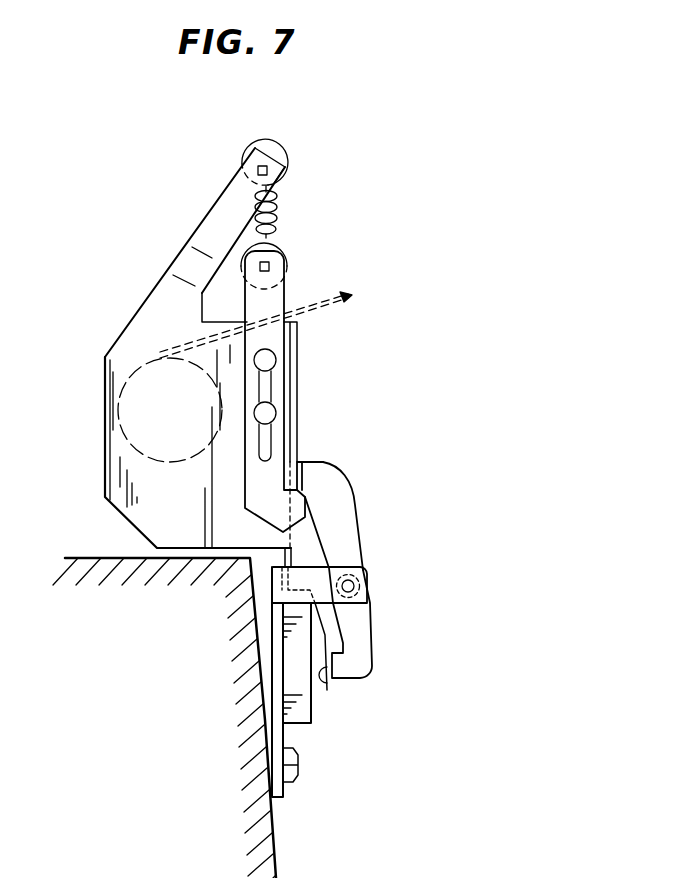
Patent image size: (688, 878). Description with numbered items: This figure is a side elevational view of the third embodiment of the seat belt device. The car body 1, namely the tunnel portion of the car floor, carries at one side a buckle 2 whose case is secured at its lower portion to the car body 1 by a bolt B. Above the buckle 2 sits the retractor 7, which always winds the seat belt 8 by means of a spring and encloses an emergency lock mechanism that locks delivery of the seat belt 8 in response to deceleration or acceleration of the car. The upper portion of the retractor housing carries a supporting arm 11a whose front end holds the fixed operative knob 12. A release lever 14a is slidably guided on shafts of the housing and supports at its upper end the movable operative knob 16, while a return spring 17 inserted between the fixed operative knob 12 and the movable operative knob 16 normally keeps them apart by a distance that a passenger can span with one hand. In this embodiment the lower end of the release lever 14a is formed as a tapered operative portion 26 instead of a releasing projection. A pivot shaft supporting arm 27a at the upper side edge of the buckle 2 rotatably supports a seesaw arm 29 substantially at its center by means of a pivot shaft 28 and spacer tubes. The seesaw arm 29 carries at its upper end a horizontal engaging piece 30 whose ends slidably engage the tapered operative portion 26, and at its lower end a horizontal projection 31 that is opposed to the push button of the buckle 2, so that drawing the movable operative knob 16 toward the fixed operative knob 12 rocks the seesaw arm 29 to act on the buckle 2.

The car body 1 is at (277, 830).
The buckle 2 is at (317, 703).
The retractor 7 is at (122, 444).
The seat belt 8 is at (347, 306).
The supporting arm 11a is at (220, 217).
The fixed operative knob 12 is at (287, 158).
The release lever 14a is at (278, 434).
The movable operative knob 16 is at (285, 256).
The return spring 17 is at (277, 205).
The tapered operative portion 26 is at (333, 480).
The pivot shaft supporting arm 27a is at (318, 578).
The pivot shaft 28 is at (366, 590).
The seesaw arm 29 is at (348, 527).
The horizontal engaging piece 30 is at (300, 462).
The horizontal projection 31 is at (333, 690).
The bolt B is at (298, 760).